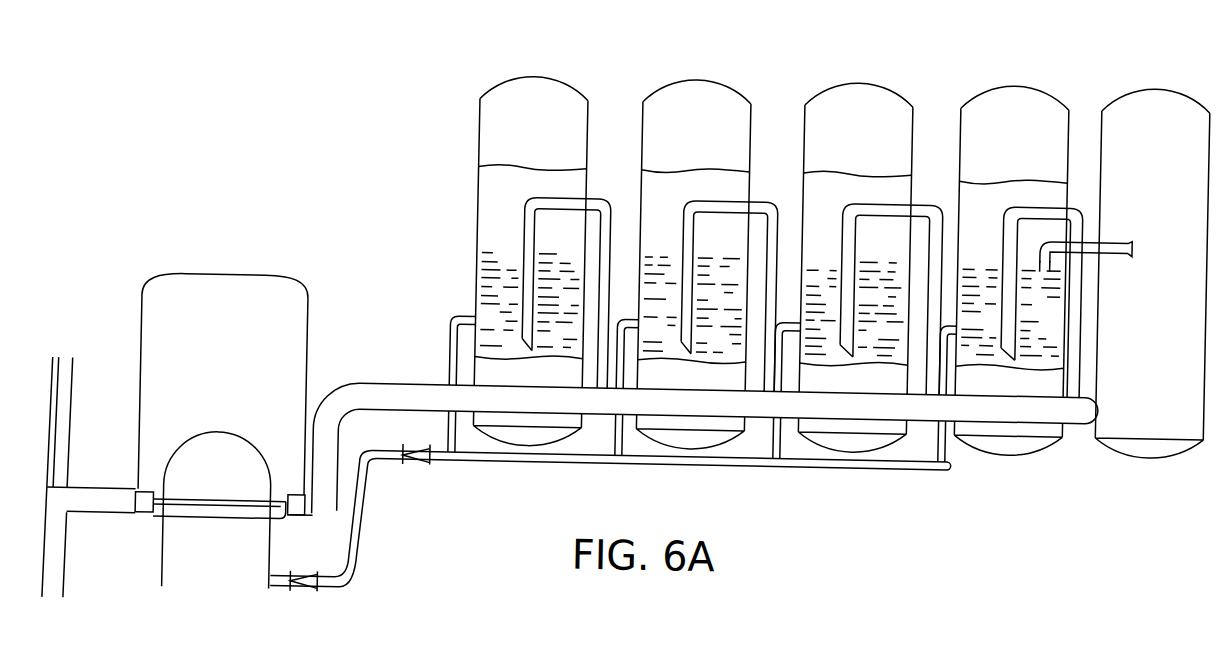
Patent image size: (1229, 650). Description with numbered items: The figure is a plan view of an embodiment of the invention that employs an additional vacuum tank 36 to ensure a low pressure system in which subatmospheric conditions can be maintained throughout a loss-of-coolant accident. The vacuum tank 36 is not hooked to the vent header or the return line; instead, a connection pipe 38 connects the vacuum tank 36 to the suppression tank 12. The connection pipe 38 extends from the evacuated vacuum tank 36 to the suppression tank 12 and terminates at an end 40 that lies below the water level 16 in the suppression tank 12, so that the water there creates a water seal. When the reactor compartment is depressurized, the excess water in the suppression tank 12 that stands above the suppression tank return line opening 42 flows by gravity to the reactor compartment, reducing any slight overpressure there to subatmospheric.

The suppression tank 12 is at (1027, 451).
The water level 16 is at (991, 266).
The vacuum tank 36 is at (1164, 90).
The connection pipe 38 is at (1091, 237).
The end 40 is at (1047, 268).
The suppression tank return line opening 42 is at (951, 337).